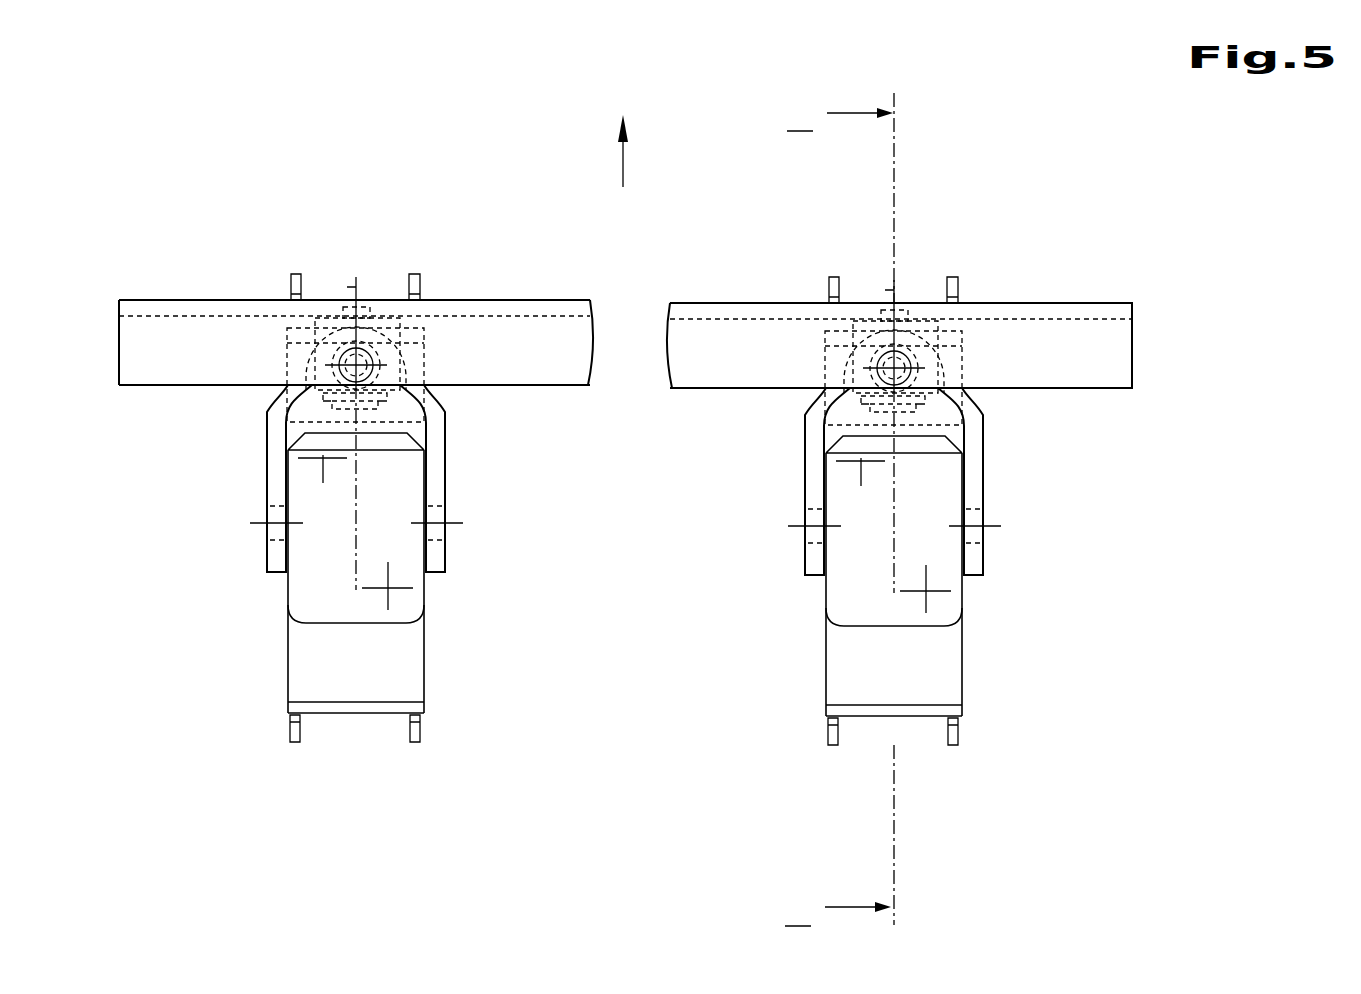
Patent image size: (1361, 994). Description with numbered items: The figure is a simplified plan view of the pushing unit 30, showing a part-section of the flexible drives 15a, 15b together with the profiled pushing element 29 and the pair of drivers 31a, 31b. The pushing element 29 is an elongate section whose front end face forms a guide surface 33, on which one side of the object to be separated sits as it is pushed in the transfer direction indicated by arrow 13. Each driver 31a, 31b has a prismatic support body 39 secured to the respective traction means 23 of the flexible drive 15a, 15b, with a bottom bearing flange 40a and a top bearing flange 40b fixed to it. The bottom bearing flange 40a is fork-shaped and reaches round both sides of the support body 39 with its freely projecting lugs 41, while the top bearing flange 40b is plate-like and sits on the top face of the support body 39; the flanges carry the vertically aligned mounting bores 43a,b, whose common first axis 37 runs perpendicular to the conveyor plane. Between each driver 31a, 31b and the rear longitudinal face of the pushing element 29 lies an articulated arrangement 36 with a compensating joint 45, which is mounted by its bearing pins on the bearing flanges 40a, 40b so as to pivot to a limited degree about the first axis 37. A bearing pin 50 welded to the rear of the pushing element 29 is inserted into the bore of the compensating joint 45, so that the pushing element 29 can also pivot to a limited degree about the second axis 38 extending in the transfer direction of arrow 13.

The arrow 13 is at (620, 168).
The flexible drive 15a is at (305, 775).
The flexible drive 15b is at (937, 790).
The traction means 23 is at (288, 733).
The pushing element 29 is at (1135, 345).
The pushing unit 30 is at (1114, 228).
The driver 31a is at (287, 650).
The driver 31b is at (962, 655).
The guide surface 33 is at (203, 298).
The articulated arrangement 36 is at (482, 406).
The first axis 37 is at (362, 360).
The second axis 38 is at (350, 287).
The support body 39 is at (407, 667).
The bottom bearing flange 40a is at (985, 490).
The top bearing flange 40b is at (840, 590).
The lugs 41 is at (805, 560).
The mounting bores 43a,b is at (338, 330).
The compensating joint 45 is at (303, 357).
The bearing pin 50 is at (343, 415).